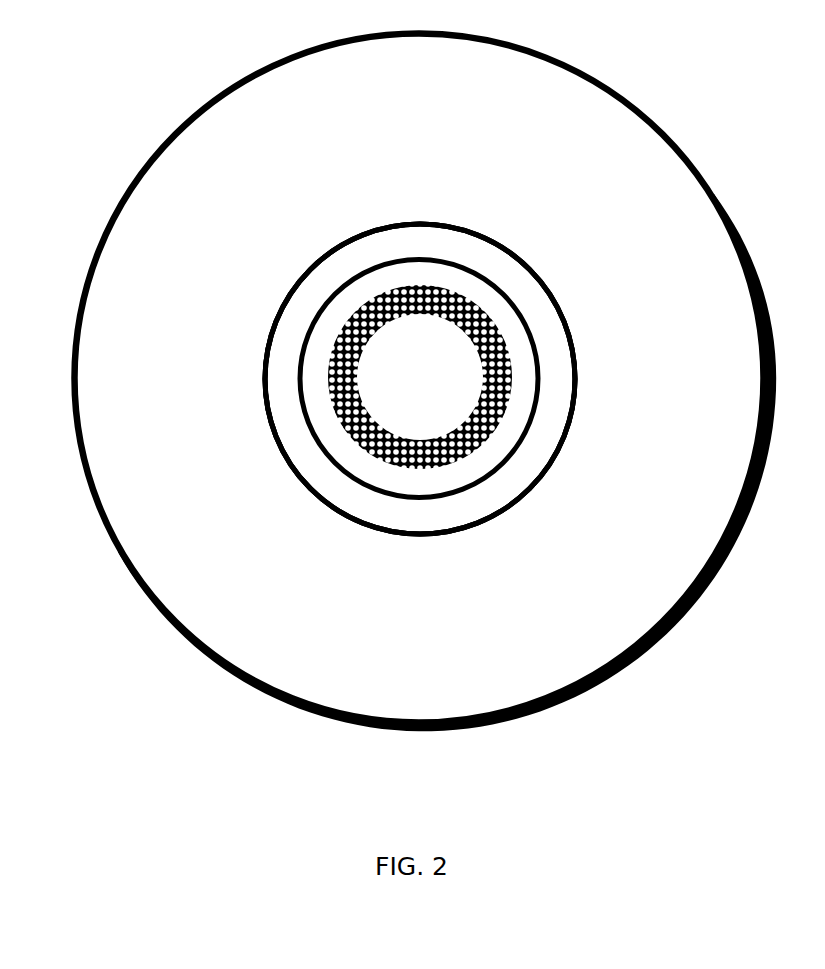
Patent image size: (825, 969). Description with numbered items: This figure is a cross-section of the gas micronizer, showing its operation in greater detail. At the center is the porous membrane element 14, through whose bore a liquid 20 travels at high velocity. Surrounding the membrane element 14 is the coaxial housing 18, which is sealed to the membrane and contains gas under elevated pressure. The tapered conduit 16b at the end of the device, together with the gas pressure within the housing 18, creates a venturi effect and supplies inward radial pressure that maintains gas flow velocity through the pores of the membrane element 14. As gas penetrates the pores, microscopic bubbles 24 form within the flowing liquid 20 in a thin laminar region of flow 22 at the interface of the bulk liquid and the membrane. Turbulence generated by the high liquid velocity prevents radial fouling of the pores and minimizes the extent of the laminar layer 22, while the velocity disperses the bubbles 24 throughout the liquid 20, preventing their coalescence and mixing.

The porous membrane element 14 is at (568, 325).
The tapered conduit 16b is at (718, 197).
The coaxial housing 18 is at (413, 222).
The liquid 20 is at (445, 358).
The laminar region of flow 22 is at (283, 298).
The microscopic bubbles 24 is at (318, 498).